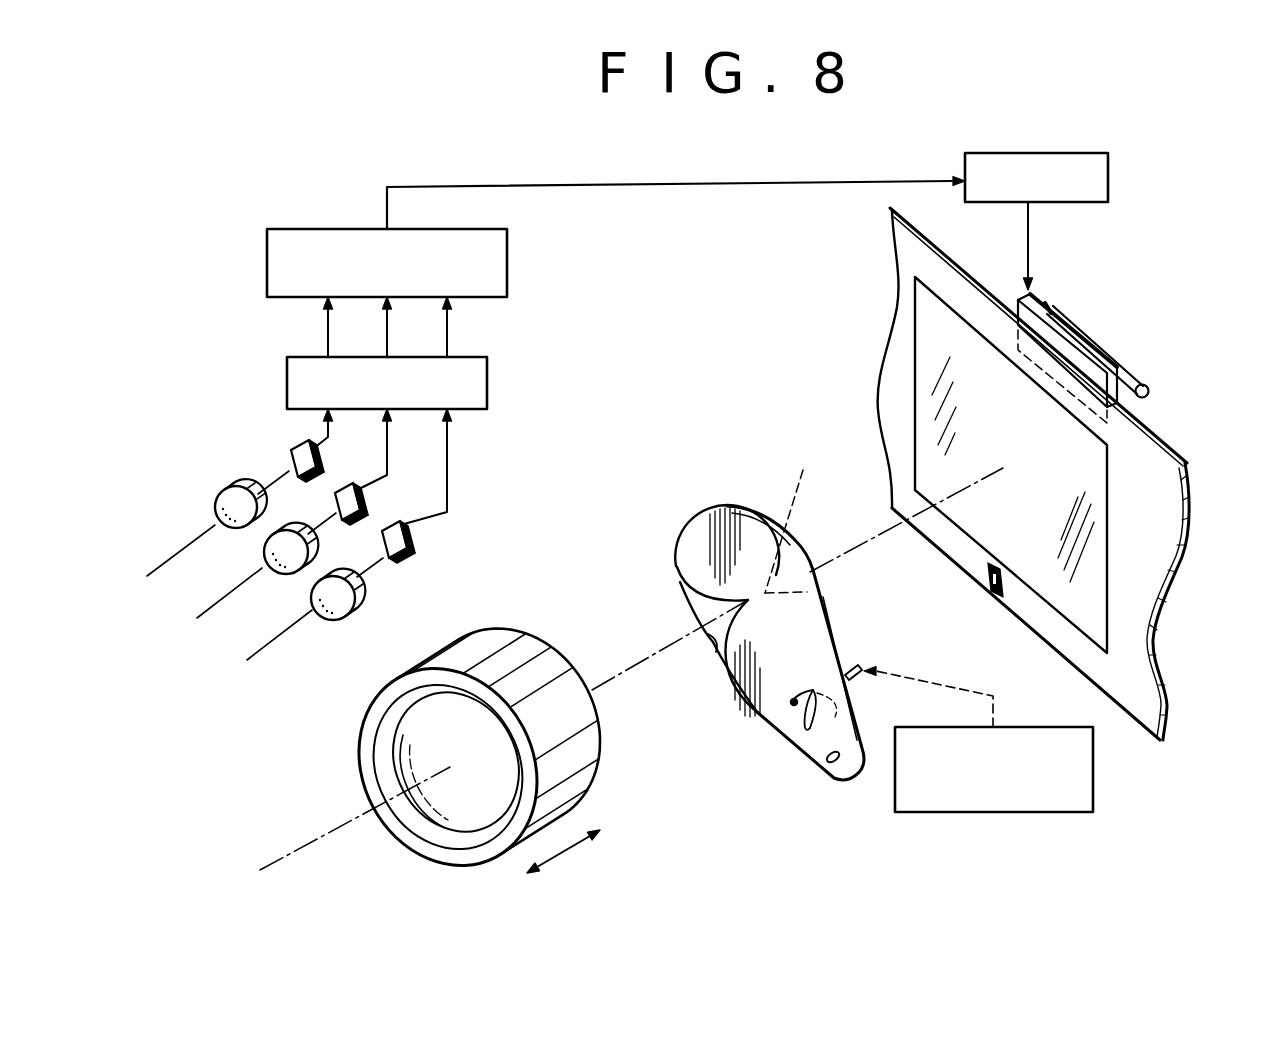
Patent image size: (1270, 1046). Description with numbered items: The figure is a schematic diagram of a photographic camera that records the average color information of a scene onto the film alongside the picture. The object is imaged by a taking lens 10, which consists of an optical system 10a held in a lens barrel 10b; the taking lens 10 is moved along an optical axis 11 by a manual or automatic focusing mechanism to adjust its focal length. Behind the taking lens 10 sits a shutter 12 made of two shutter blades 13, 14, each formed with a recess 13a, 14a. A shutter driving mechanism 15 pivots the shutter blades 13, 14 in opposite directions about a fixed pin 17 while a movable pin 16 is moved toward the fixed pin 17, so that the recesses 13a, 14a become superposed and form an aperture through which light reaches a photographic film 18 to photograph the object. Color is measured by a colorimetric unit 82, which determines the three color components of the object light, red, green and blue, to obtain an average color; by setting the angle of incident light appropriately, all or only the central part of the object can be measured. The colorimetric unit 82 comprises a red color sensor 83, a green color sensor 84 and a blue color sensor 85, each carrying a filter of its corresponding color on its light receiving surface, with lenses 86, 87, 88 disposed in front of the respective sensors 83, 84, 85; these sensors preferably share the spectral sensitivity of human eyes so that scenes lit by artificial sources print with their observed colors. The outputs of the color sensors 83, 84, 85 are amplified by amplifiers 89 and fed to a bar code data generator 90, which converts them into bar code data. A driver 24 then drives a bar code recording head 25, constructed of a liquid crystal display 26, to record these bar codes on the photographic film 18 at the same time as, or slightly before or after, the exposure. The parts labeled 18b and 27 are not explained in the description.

The taking lens 10 is at (476, 764).
The optical system 10a is at (410, 733).
The lens barrel 10b is at (423, 847).
The optical axis 11 is at (317, 845).
The shutter 12 is at (672, 506).
The shutter blade 13 is at (687, 567).
The recess 13a is at (713, 663).
The shutter blade 14 is at (697, 612).
The recess 14a is at (797, 518).
The shutter driving mechanism 15 is at (893, 808).
The movable pin 16 is at (757, 713).
The fixed pin 17 is at (826, 758).
The photographic film 18 is at (1147, 637).
The exposure window 18b is at (933, 385).
The driver 24 is at (1108, 183).
The bar code recording head 25 is at (1102, 316).
The liquid crystal display 26 is at (1107, 353).
The rod end 27 is at (1137, 387).
The colorimetric unit 82 is at (205, 453).
The red color sensor 83 is at (289, 455).
The green color sensor 84 is at (347, 488).
The blue color sensor 85 is at (403, 526).
The lens 86 is at (215, 508).
The lens 87 is at (260, 552).
The lens 88 is at (313, 597).
The amplifiers 89 is at (487, 377).
The bar code data generator 90 is at (507, 257).